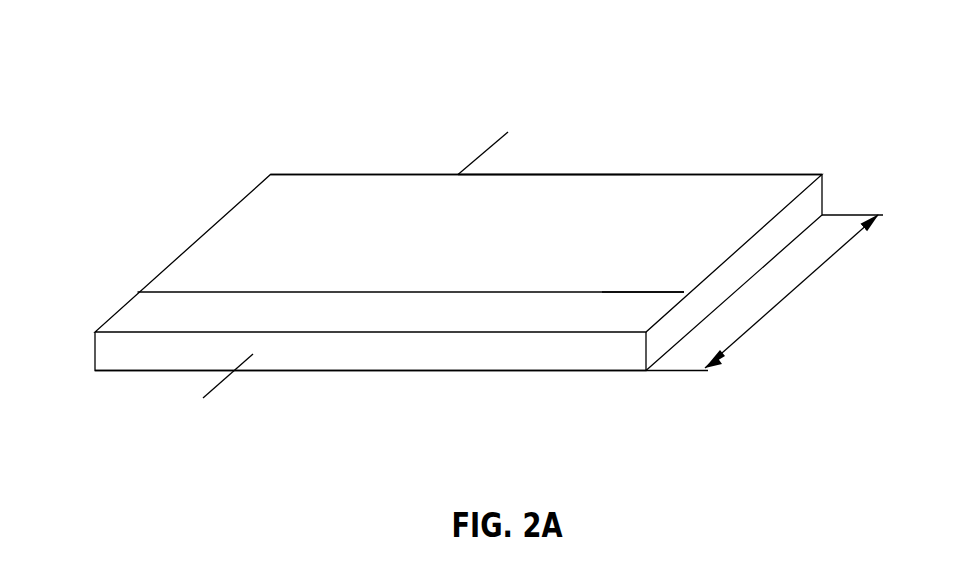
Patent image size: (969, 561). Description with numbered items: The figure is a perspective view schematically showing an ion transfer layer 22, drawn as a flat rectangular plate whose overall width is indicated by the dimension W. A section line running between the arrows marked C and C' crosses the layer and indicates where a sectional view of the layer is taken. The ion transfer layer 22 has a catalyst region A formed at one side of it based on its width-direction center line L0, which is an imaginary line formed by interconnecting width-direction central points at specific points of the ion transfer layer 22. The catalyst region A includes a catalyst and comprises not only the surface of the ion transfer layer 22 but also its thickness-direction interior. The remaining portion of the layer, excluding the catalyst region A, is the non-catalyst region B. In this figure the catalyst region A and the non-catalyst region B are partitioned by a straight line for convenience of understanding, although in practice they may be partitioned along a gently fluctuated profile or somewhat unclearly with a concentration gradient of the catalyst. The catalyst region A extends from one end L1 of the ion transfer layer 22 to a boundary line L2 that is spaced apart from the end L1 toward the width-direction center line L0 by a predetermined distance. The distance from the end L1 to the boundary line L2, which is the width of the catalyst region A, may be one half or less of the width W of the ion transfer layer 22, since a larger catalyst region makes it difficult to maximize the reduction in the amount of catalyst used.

The ion transfer layer 22 is at (310, 113).
The catalyst region A is at (137, 313).
The non-catalyst region B is at (237, 220).
The section line C is at (185, 385).
The section line C' is at (464, 147).
The width-direction center line L0 is at (515, 255).
The end of the ion transfer layer L1 is at (447, 332).
The boundary line L2 is at (602, 292).
The width of the ion transfer layer W is at (764, 293).